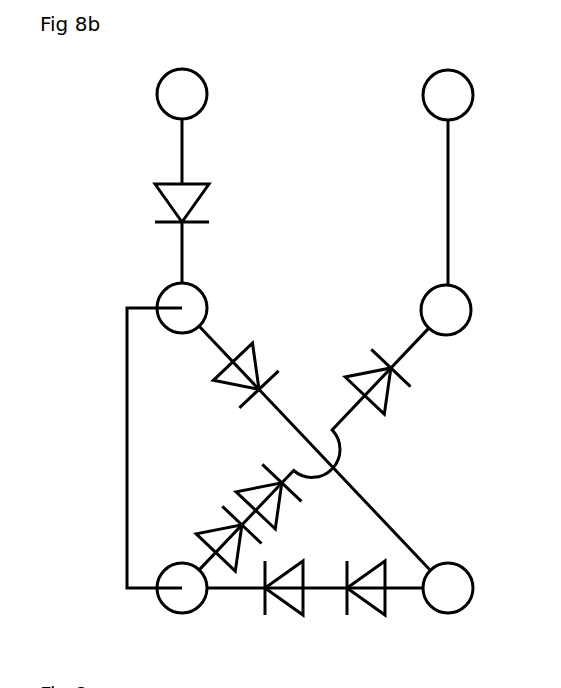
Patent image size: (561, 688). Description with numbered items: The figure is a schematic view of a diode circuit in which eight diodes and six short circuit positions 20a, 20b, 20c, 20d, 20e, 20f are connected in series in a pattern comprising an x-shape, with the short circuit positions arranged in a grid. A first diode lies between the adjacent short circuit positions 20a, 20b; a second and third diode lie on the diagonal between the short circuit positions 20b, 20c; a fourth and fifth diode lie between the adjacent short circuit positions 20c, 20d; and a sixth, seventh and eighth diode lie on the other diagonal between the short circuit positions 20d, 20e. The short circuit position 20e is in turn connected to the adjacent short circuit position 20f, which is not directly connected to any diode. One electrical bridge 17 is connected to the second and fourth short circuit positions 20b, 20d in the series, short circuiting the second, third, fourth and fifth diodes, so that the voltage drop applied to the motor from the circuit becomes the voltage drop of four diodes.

The electrical bridge 17 is at (114, 503).
The short circuit position 20a is at (221, 110).
The short circuit position 20b is at (220, 288).
The short circuit position 20c is at (441, 630).
The short circuit position 20d is at (175, 634).
The short circuit position 20e is at (457, 347).
The short circuit position 20f is at (407, 120).